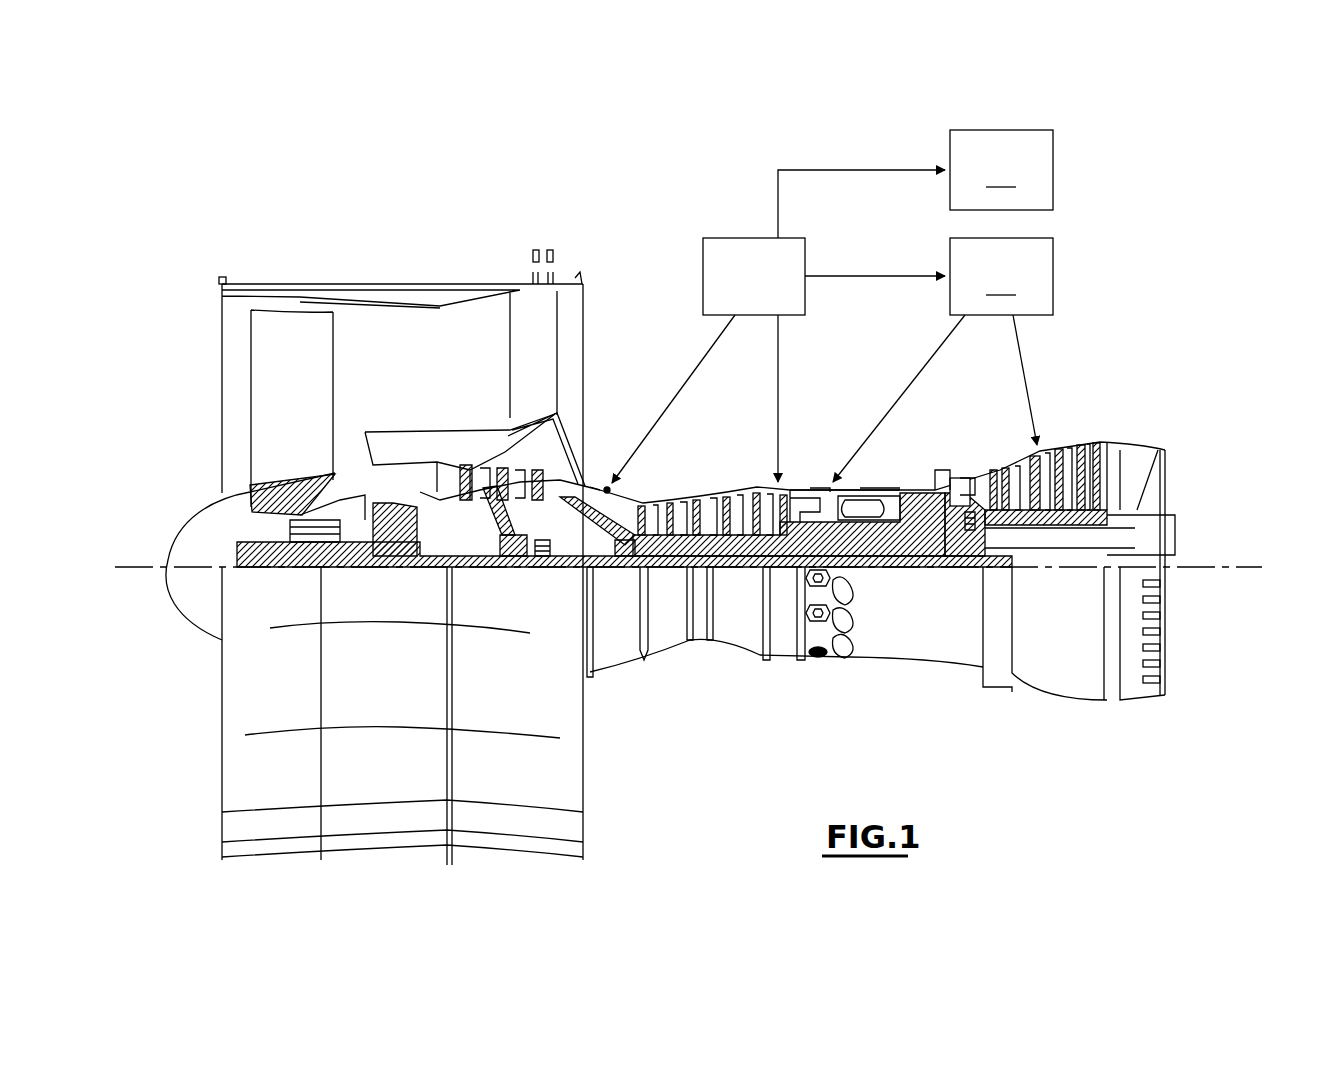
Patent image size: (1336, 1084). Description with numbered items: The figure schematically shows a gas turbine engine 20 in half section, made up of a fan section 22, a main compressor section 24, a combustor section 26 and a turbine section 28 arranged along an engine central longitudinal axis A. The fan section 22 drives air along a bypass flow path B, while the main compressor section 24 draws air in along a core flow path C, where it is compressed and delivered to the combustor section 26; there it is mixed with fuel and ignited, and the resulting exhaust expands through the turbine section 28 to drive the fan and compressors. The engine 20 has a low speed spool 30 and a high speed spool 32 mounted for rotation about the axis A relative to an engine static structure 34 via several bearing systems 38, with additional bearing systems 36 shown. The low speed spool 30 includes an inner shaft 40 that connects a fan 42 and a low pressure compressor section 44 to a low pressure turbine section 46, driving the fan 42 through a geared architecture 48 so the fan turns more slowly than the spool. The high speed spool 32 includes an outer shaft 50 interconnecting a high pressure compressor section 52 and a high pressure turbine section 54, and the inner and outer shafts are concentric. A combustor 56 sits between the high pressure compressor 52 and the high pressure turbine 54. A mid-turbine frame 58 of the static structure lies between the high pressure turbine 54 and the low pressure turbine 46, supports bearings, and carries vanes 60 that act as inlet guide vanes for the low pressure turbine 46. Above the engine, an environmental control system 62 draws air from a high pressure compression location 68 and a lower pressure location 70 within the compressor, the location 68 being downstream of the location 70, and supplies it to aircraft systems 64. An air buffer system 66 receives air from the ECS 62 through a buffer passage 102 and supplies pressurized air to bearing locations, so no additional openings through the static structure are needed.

The gas turbine engine 20 is at (1115, 318).
The fan section 22 is at (430, 254).
The main compressor section 24 is at (443, 403).
The combustor section 26 is at (910, 403).
The turbine section 28 is at (913, 403).
The low speed spool 30 is at (742, 578).
The high speed spool 32 is at (788, 490).
The turbine rotors 34 is at (1073, 537).
The engine static structure 36 is at (782, 662).
The bearing systems 38 is at (300, 568).
The inner shaft 40 is at (603, 570).
The fan 42 is at (308, 411).
The low pressure compressor section 44 is at (517, 470).
The low pressure turbine section 46 is at (1048, 460).
The geared architecture 48 is at (408, 568).
The outer shaft 50 is at (870, 555).
The high pressure compressor section 52 is at (720, 543).
The high pressure turbine section 54 is at (923, 487).
The combustor 56 is at (857, 510).
The mid-turbine frame 58 is at (970, 472).
The vanes 60 is at (988, 537).
The environmental control system (ECS) 62 is at (730, 238).
The aircraft systems 64 is at (915, 184).
The air buffer system 66 is at (929, 341).
The high pressure compression location 68 is at (776, 482).
The lower pressure location 70 is at (617, 483).
The buffer passage 102 is at (862, 277).
The engine central longitudinal axis A is at (1258, 567).
The bypass flow path B is at (462, 358).
The core flow path C is at (395, 464).